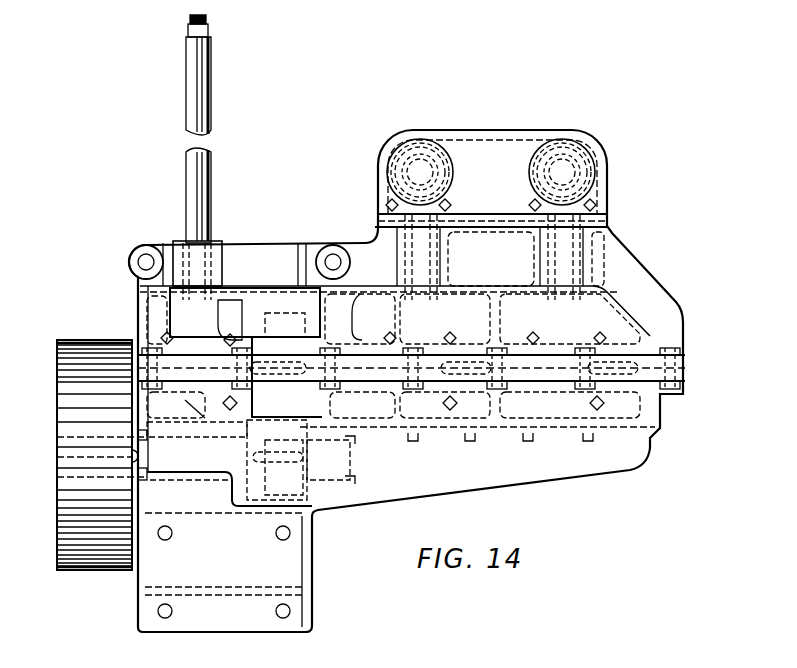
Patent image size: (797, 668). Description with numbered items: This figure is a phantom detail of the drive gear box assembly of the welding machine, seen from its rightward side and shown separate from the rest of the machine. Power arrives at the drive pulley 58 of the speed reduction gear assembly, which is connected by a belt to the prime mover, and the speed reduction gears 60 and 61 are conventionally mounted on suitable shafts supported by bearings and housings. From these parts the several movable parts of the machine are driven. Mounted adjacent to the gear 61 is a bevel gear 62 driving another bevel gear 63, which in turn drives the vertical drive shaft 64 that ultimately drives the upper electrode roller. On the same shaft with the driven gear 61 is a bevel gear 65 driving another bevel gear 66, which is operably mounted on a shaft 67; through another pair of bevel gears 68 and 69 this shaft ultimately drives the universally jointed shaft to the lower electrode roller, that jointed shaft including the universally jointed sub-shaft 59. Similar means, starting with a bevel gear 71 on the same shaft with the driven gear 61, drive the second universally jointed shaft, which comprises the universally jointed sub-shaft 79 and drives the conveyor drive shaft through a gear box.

The drive pulley 58 is at (83, 556).
The universally jointed sub-shaft 59 is at (437, 160).
The speed reduction gear 60 is at (345, 490).
The speed reduction gear 61 is at (290, 312).
The bevel gear 62 is at (242, 336).
The bevel gear 63 is at (163, 338).
The vertical drive shaft 64 is at (212, 207).
The bevel gear 65 is at (443, 401).
The bevel gear 66 is at (437, 314).
The shaft 67 is at (420, 257).
The bevel gear 68 is at (452, 205).
The bevel gear 69 is at (452, 166).
The bevel gear 71 is at (590, 401).
The universally jointed sub-shaft 79 is at (566, 171).